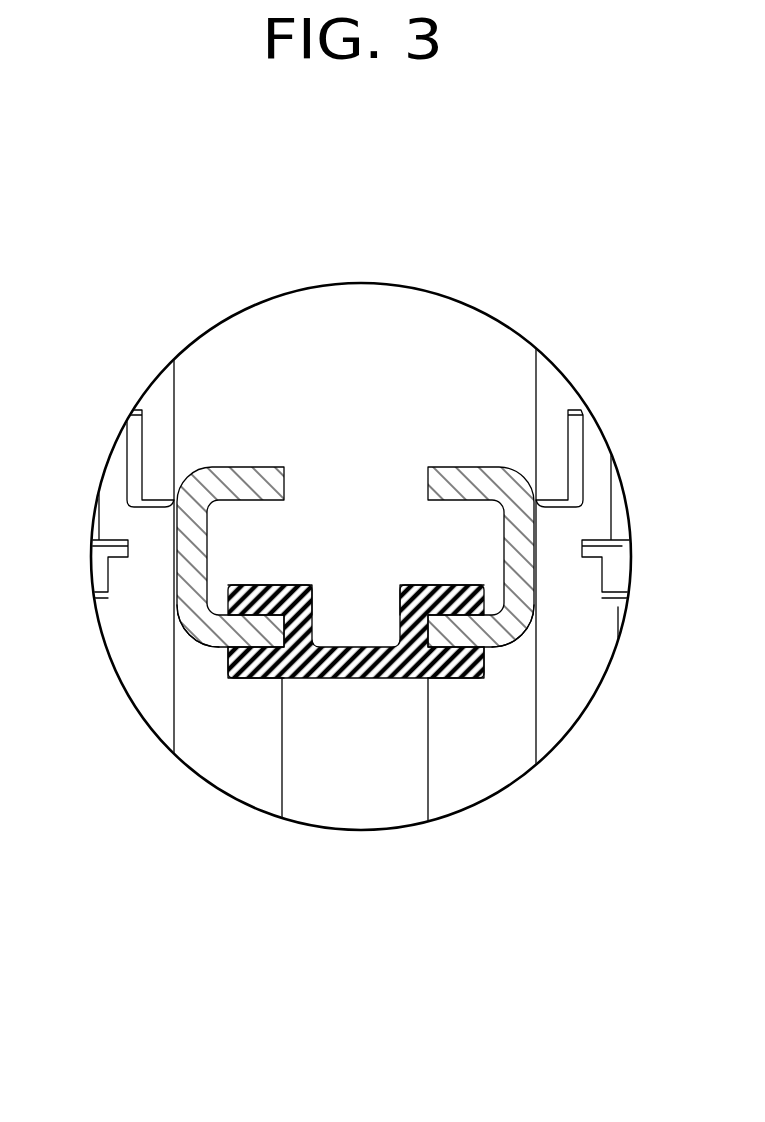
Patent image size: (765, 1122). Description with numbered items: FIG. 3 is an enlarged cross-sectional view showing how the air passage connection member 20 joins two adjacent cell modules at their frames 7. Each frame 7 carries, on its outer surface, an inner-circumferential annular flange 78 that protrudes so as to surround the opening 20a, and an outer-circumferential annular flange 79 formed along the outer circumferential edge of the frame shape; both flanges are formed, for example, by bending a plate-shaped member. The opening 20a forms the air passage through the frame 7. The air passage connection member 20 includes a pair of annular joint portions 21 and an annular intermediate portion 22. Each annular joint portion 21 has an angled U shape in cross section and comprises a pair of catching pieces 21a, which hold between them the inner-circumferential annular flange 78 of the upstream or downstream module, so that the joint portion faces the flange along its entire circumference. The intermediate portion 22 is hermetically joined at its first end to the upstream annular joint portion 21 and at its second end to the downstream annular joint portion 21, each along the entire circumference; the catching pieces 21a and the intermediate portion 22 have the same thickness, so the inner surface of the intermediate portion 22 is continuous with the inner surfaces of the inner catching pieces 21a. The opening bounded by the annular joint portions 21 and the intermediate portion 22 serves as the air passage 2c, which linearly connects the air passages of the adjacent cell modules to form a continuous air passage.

The frame 7 is at (161, 712).
The air passage connection member 20 is at (346, 825).
The opening 20a is at (346, 825).
The air passage 2c is at (351, 815).
The annular joint portion 21 is at (252, 592).
The catching piece 21a is at (249, 680).
The intermediate portion 22 is at (362, 666).
The inner-circumferential annular flange 78 is at (225, 640).
The outer-circumferential annular flange 79 is at (263, 476).